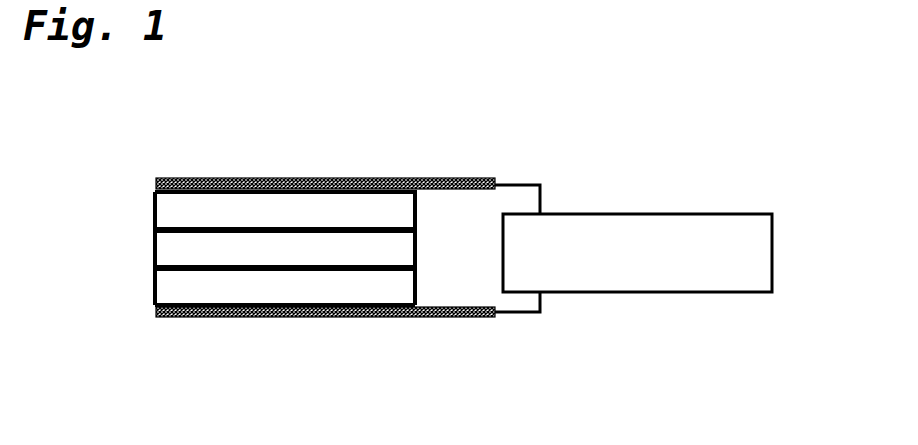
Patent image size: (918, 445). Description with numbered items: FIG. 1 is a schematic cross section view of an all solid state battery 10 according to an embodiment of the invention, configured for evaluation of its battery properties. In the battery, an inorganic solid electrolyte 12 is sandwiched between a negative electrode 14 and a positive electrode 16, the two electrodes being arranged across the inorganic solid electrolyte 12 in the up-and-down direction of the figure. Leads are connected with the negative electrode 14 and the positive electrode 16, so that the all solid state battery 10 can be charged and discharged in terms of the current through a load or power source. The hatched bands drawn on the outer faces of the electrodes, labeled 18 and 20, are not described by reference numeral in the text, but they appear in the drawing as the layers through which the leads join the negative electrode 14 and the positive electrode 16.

The all solid state battery 10 is at (330, 145).
The inorganic solid electrolyte 12 is at (180, 250).
The negative electrode 14 is at (168, 213).
The positive electrode 16 is at (175, 287).
The first current collector 18 is at (165, 178).
The second current collector 20 is at (153, 313).